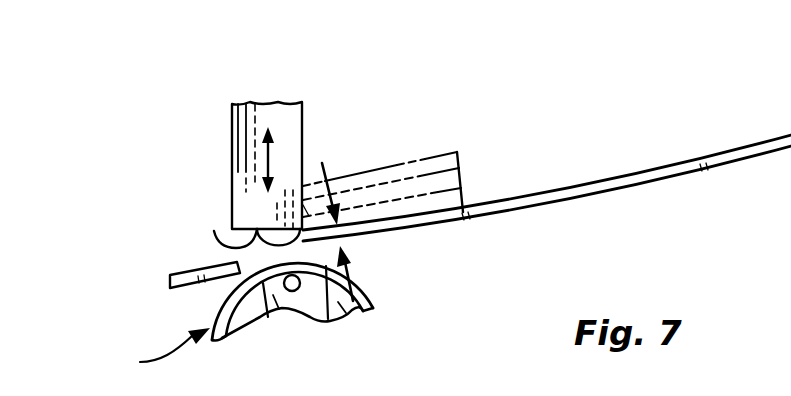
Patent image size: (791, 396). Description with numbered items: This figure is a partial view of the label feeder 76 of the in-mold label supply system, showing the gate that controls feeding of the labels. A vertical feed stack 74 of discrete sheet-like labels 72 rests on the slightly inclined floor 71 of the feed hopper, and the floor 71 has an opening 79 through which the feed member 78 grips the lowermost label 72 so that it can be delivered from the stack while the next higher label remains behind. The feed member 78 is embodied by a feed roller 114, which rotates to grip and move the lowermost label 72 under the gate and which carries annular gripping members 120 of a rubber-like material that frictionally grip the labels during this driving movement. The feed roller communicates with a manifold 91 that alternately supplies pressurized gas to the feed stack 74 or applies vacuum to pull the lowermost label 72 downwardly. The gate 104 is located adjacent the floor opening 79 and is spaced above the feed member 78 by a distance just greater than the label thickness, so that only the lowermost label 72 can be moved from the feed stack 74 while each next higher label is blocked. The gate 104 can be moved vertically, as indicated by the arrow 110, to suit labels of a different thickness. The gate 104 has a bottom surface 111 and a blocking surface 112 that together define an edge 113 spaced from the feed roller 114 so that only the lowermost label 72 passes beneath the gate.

The gate 104 is at (292, 127).
The arrow 110 is at (266, 168).
The blocking surface 112 is at (307, 208).
The feed stack 74 is at (495, 148).
The label 72 is at (445, 207).
The floor 71 is at (438, 224).
The edge 113 is at (253, 228).
The bottom surface 111 is at (216, 241).
The opening 79 is at (243, 270).
The annular gripping members 120 is at (370, 281).
The feeder 76 is at (392, 317).
The feed member 78 is at (155, 351).
The manifold 91 is at (280, 316).
The feed roller 114 is at (343, 318).